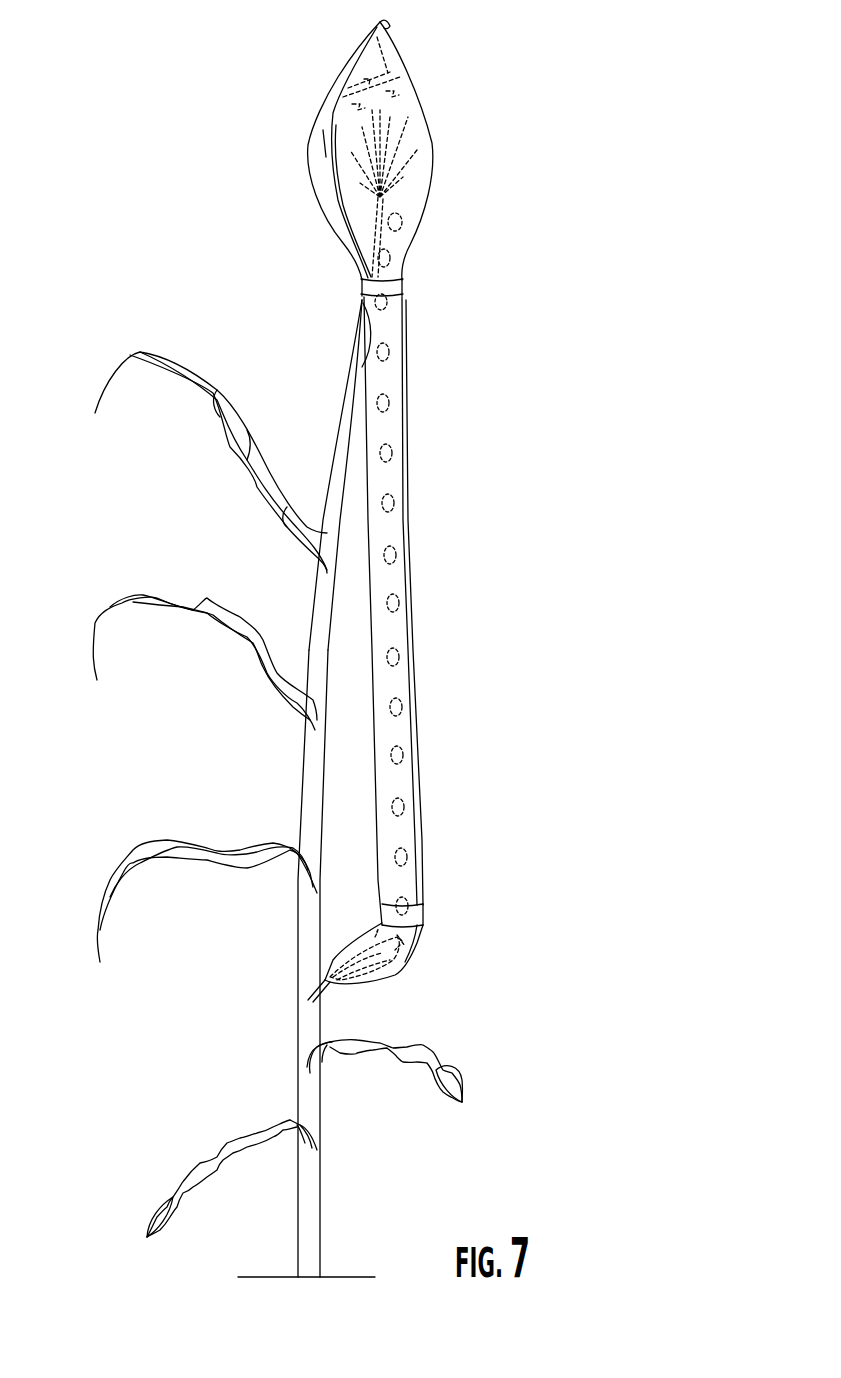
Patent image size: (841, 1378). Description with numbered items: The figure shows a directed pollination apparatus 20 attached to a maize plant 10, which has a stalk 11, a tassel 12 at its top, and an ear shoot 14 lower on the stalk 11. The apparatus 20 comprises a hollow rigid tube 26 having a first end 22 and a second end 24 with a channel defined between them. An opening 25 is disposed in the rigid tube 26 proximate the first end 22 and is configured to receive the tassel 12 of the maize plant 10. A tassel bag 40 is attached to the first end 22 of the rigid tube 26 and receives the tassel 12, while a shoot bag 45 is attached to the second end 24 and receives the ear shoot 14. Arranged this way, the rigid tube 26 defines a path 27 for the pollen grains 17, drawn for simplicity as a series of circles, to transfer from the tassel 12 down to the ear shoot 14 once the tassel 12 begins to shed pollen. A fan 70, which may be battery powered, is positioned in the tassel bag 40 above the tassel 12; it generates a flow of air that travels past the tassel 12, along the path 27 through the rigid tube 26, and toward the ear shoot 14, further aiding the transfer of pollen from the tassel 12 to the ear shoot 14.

The maize plant 10 is at (190, 327).
The stalk 11 is at (300, 937).
The tassel 12 is at (333, 123).
The ear shoot 14 is at (365, 953).
The pollen grains 17 is at (403, 228).
The directed pollination apparatus 20 is at (421, 395).
The first end 22 is at (411, 283).
The second end 24 is at (436, 910).
The opening 25 is at (340, 337).
The hollow rigid tube 26 is at (398, 583).
The path 27 is at (403, 688).
The tassel bag 40 is at (427, 122).
The shoot bag 45 is at (392, 973).
The fan 70 is at (355, 83).